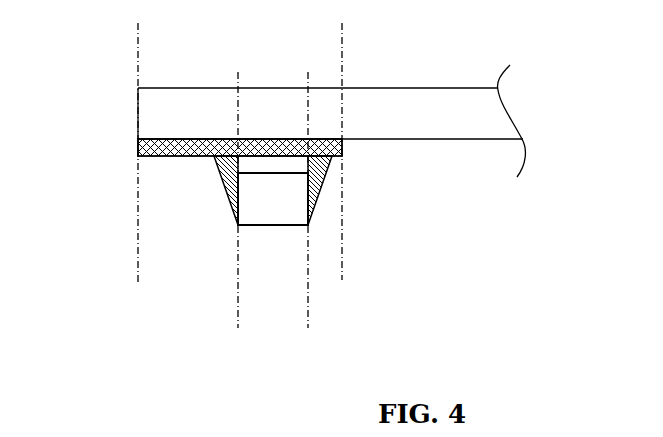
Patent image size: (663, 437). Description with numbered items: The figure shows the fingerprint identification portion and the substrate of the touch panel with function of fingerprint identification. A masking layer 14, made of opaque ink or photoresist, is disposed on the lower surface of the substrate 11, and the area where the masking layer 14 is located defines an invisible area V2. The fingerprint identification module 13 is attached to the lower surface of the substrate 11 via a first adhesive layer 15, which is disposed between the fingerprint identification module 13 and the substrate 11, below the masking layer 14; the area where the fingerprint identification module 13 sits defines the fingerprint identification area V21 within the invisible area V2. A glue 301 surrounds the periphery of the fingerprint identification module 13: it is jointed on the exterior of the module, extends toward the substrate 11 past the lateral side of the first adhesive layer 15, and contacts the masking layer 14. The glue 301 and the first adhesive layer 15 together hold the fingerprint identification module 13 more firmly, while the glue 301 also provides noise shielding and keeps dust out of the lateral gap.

The substrate 11 is at (410, 130).
The fingerprint identification module 13 is at (272, 210).
The masking layer 14 is at (137, 144).
The first adhesive layer 15 is at (275, 163).
The glue 301 is at (317, 188).
The invisible area V2 is at (240, 151).
The fingerprint identification area V21 is at (273, 203).